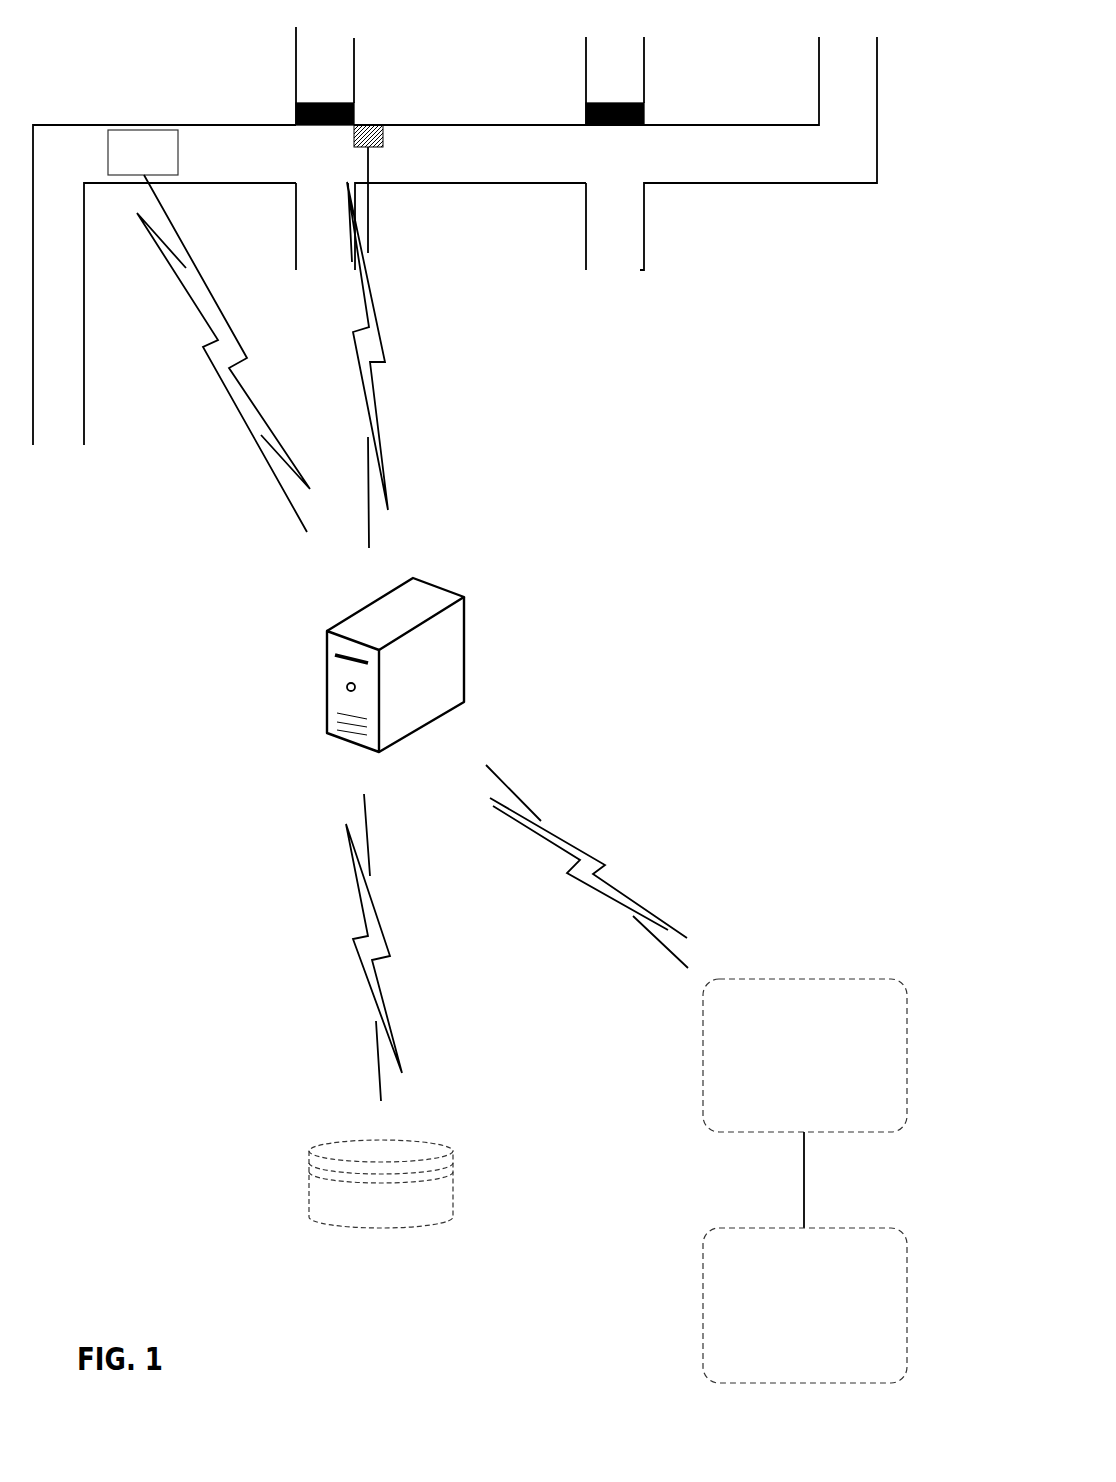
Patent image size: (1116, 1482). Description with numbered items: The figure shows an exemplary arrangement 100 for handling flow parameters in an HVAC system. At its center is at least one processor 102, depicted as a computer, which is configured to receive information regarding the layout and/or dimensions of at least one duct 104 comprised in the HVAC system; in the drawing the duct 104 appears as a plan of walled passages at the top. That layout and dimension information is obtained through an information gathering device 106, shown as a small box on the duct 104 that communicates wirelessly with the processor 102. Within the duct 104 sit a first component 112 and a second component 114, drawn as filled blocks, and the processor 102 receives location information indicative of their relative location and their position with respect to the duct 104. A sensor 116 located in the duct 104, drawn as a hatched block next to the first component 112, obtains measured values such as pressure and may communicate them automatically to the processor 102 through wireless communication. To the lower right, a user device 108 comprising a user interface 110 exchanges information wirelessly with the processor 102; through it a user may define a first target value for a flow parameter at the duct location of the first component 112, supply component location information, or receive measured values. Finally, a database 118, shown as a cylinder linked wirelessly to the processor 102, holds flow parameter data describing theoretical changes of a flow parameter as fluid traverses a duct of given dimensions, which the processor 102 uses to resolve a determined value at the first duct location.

The arrangement 100 is at (655, 587).
The processor 102 is at (379, 752).
The duct 104 is at (673, 125).
The information gathering device 106 is at (143, 130).
The user device 108 is at (820, 979).
The user interface 110 is at (703, 1305).
The first component 112 is at (330, 102).
The second component 114 is at (620, 102).
The sensor 116 is at (383, 147).
The database 118 is at (454, 1183).